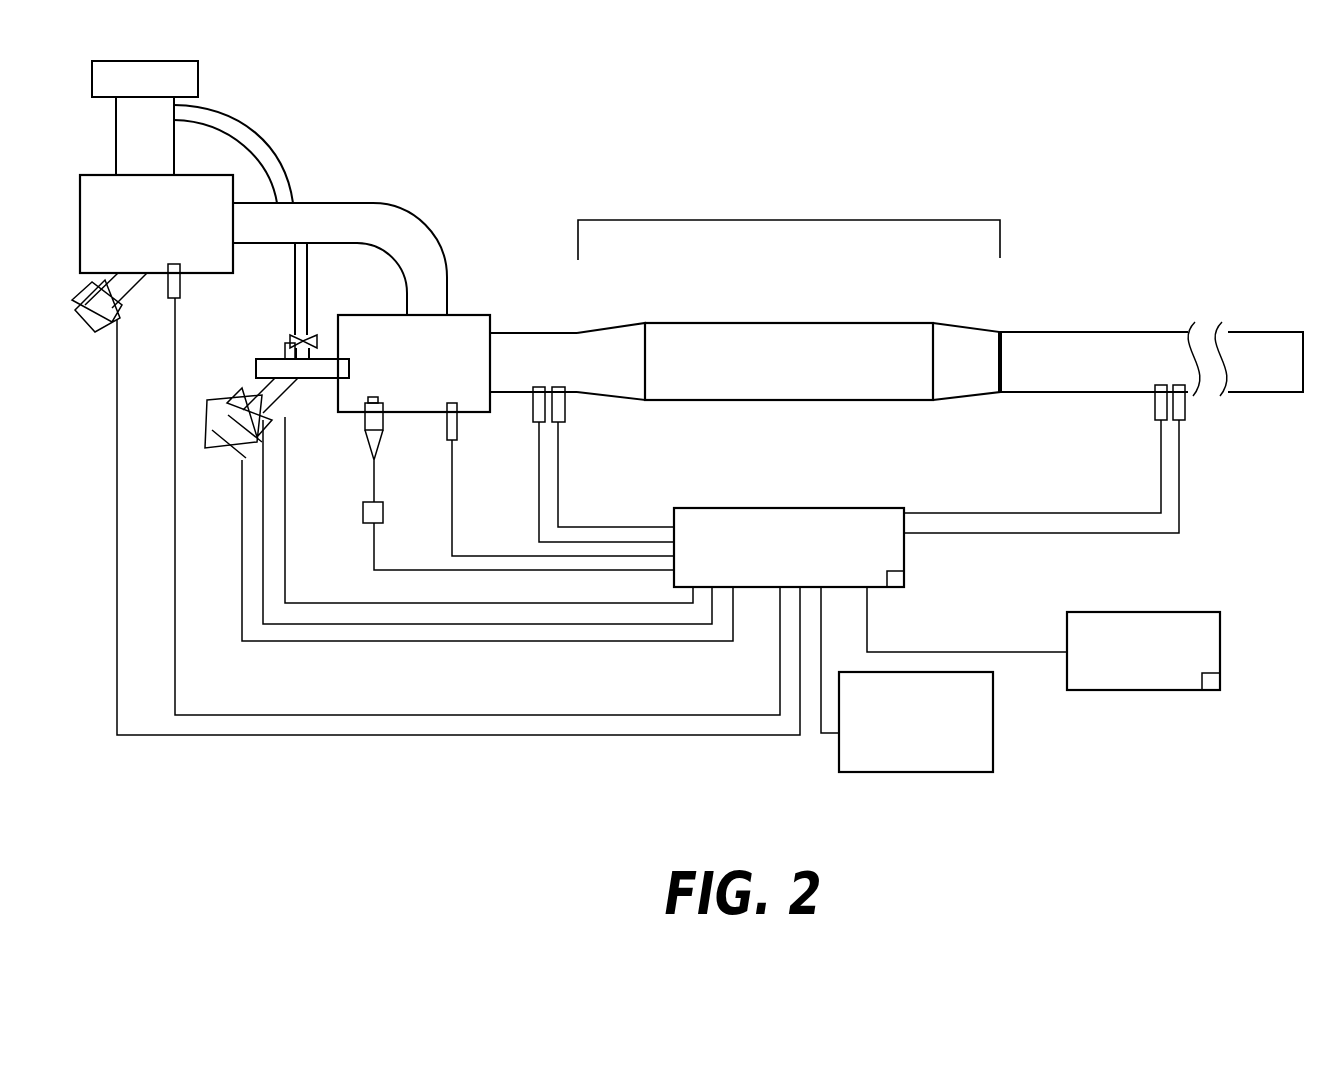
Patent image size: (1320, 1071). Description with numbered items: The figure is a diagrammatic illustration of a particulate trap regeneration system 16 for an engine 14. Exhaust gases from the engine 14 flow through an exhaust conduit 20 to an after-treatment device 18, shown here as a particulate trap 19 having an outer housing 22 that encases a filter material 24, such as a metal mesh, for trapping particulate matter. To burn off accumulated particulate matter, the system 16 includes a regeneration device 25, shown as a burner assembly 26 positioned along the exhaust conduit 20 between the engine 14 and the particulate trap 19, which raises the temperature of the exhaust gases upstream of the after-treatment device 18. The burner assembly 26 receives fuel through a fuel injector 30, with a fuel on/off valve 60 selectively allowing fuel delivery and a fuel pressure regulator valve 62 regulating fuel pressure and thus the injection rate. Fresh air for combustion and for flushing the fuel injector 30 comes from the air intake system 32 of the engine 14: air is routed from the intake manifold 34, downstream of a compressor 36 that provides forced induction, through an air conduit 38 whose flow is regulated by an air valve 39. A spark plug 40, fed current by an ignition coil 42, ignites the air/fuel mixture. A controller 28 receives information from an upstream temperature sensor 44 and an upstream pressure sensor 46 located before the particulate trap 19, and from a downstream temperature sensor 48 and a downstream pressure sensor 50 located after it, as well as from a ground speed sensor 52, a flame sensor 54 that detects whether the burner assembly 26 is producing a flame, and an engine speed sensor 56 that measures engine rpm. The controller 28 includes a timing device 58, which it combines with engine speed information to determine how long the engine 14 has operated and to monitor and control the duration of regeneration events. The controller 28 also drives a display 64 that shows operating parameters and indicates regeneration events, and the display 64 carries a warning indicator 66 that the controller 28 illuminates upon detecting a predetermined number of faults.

The engine 14 is at (80, 200).
The system 16 is at (729, 145).
The after-treatment device 18 is at (852, 220).
The particulate trap 19 is at (953, 303).
The exhaust conduit 20 is at (401, 203).
The outer housing 22 is at (788, 323).
The filter material 24 is at (727, 400).
The regeneration device 25 is at (509, 222).
The burner assembly 26 is at (370, 315).
The controller 28 is at (838, 508).
The fuel injector 30 is at (262, 359).
The air intake system 32 is at (276, 90).
The intake manifold 34 is at (116, 130).
The compressor 36 is at (92, 80).
The air conduit 38 is at (280, 166).
The air valve 39 is at (314, 335).
The spark plug 40 is at (365, 430).
The ignition coil 42 is at (363, 512).
The upstream temperature sensor 44 is at (533, 418).
The upstream pressure sensor 46 is at (565, 418).
The downstream temperature sensor 48 is at (1155, 416).
The downstream pressure sensor 50 is at (1185, 416).
The ground speed sensor 52 is at (993, 743).
The flame sensor 54 is at (447, 428).
The engine speed sensor 56 is at (180, 283).
The timing device 58 is at (906, 580).
The fuel on/off valve 60 is at (228, 405).
The fuel pressure regulator valve 62 is at (243, 387).
The display 64 is at (1222, 637).
The warning indicator 66 is at (1222, 680).